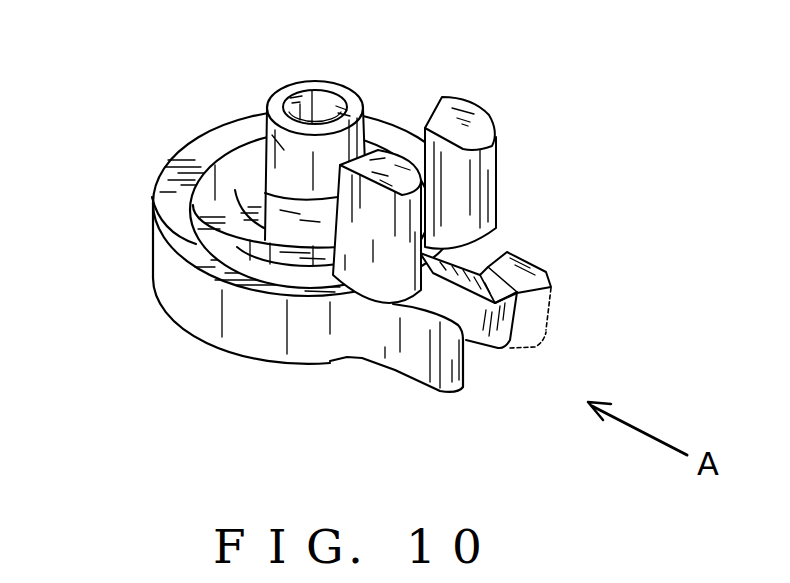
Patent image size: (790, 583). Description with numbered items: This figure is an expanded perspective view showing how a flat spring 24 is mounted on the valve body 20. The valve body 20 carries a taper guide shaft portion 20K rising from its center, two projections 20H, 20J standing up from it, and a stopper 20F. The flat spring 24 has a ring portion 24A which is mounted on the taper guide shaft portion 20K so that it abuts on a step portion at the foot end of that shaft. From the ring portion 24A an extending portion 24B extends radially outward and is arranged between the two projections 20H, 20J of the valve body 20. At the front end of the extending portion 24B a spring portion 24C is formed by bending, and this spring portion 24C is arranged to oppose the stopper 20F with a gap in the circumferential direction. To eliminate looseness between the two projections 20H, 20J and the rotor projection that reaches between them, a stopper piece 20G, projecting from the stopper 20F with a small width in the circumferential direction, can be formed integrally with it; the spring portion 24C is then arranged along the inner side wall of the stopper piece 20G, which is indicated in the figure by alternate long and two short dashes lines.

The valve body 20 is at (163, 267).
The flat spring 24 is at (207, 212).
The ring portion 24A is at (262, 200).
The taper guide shaft portion 20K is at (282, 158).
The projection 20J is at (478, 126).
The extending portion 24B is at (445, 250).
The spring portion 24C is at (493, 351).
The stopper piece 20G is at (538, 327).
The projection 20H is at (373, 245).
The stopper 20F is at (453, 370).